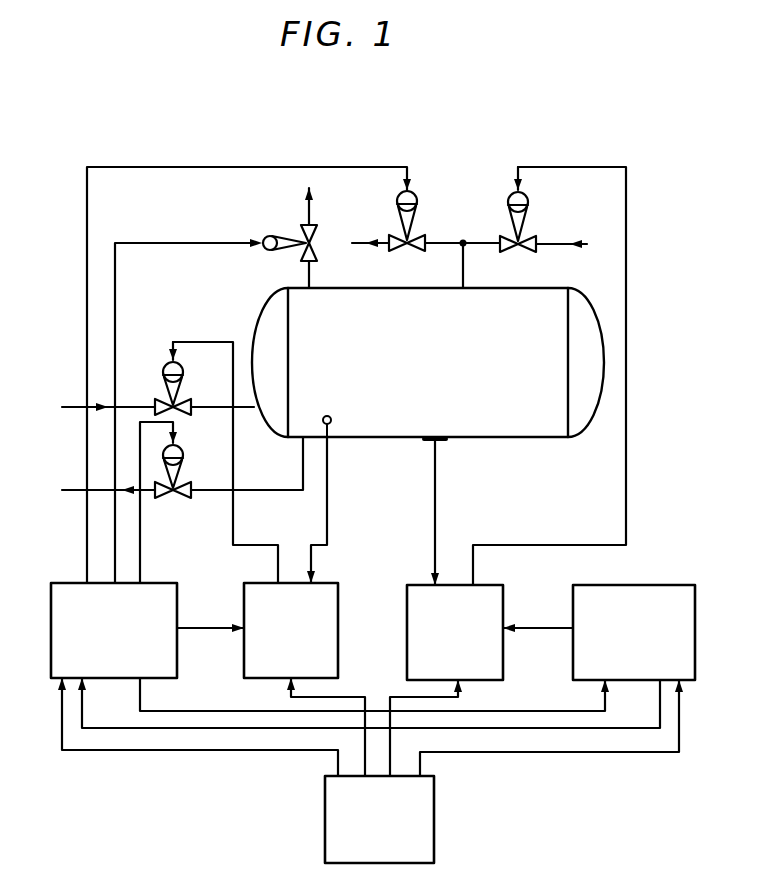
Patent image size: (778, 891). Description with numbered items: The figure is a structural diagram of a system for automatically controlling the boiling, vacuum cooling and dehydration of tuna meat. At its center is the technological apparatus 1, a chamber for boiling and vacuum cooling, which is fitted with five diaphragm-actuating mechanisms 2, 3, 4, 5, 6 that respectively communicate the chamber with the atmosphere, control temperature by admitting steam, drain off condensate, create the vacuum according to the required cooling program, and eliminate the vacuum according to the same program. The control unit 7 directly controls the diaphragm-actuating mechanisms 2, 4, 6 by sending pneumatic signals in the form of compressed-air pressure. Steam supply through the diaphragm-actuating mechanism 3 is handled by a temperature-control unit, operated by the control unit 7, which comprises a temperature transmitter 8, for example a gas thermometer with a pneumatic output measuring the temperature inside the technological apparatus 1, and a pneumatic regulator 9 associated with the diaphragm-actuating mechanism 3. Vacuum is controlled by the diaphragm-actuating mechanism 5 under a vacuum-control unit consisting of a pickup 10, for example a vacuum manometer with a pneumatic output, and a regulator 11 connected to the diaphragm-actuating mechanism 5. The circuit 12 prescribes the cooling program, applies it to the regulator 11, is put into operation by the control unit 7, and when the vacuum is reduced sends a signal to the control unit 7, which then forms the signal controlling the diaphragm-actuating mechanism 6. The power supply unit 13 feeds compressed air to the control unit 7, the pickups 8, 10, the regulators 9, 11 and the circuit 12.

The technological apparatus 1 is at (458, 359).
The diaphragm-actuating mechanism for communication with the atmosphere 2 is at (300, 234).
The diaphragm-actuating mechanism for temperature control 3 is at (181, 378).
The diaphragm-actuating mechanism for draining off the condensate 4 is at (181, 462).
The diaphragm-actuating mechanism for creating the vacuum 5 is at (524, 218).
The diaphragm-actuating mechanism for eliminating the vacuum 6 is at (413, 218).
The control unit 7 is at (124, 642).
The temperature transmitter 8 is at (336, 421).
The regulator 9 is at (297, 638).
The pickup 10 is at (445, 443).
The regulator 11 is at (466, 638).
The circuit for prescribing the cooling program 12 is at (642, 638).
The power supply unit 13 is at (388, 822).